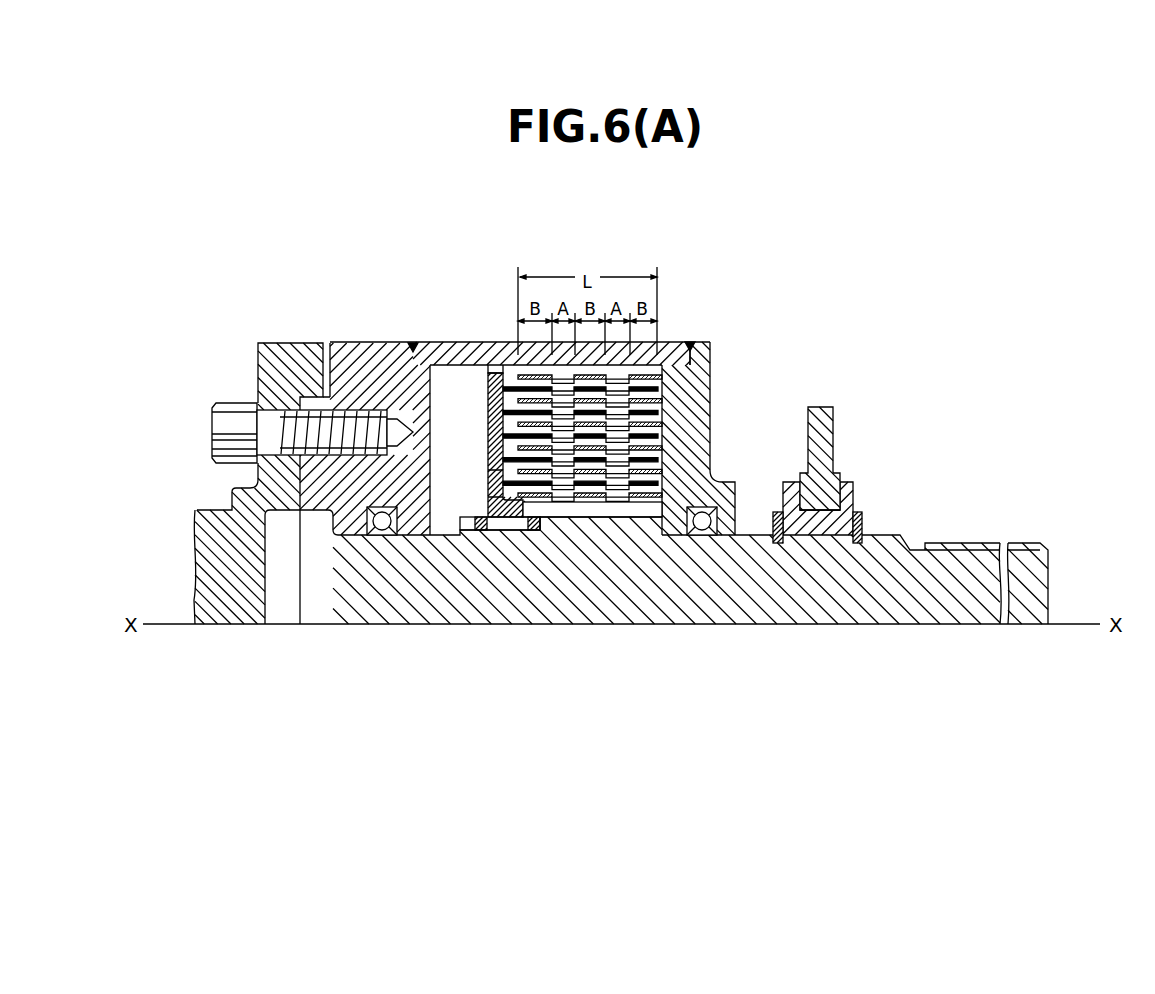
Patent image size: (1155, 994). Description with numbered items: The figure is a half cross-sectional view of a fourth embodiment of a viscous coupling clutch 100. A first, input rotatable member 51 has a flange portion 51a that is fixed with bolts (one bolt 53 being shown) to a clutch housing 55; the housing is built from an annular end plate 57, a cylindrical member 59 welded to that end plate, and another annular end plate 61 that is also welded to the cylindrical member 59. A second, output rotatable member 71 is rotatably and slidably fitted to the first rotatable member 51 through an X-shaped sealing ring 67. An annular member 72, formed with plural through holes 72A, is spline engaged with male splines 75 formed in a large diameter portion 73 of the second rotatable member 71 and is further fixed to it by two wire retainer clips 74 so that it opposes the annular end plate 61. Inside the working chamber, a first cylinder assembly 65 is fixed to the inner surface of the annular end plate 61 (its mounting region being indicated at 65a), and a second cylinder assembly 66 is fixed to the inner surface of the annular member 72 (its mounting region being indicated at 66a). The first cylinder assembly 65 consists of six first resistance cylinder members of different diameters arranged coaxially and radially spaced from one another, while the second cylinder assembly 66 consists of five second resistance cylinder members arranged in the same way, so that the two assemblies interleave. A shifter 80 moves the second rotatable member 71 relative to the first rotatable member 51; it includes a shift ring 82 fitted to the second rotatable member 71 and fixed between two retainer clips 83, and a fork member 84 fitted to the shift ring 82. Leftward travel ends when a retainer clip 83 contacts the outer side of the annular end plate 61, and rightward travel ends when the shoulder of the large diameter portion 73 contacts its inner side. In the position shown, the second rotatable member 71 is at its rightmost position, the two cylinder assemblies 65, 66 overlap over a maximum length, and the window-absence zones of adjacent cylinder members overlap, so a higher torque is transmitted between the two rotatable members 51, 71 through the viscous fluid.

The first rotatable member 51 is at (212, 528).
The flange portion 51a is at (270, 361).
The bolt 53 is at (223, 430).
The clutch housing 55 is at (346, 343).
The annular end plate 57 is at (387, 348).
The cylindrical member 59 is at (433, 350).
The annular end plate 61 is at (695, 425).
The first cylinder assembly 65 is at (610, 375).
The mounting portion of first cylinder assembly 65a is at (682, 339).
The second cylinder assembly 66 is at (515, 374).
The mounting portion of second cylinder assembly 66a is at (488, 347).
The sealing ring 67 is at (382, 535).
The second rotatable member 71 is at (957, 565).
The annular member 72 is at (488, 432).
The through holes 72A is at (500, 483).
The large diameter portion 73 is at (621, 512).
The wire retainer clips 74 is at (480, 531).
The male splines 75 is at (548, 524).
The shifter 80 is at (836, 408).
The shift ring 82 is at (855, 486).
The retainer clips 83 is at (778, 543).
The fork member 84 is at (823, 438).
The viscous coupling clutch 100 is at (790, 342).